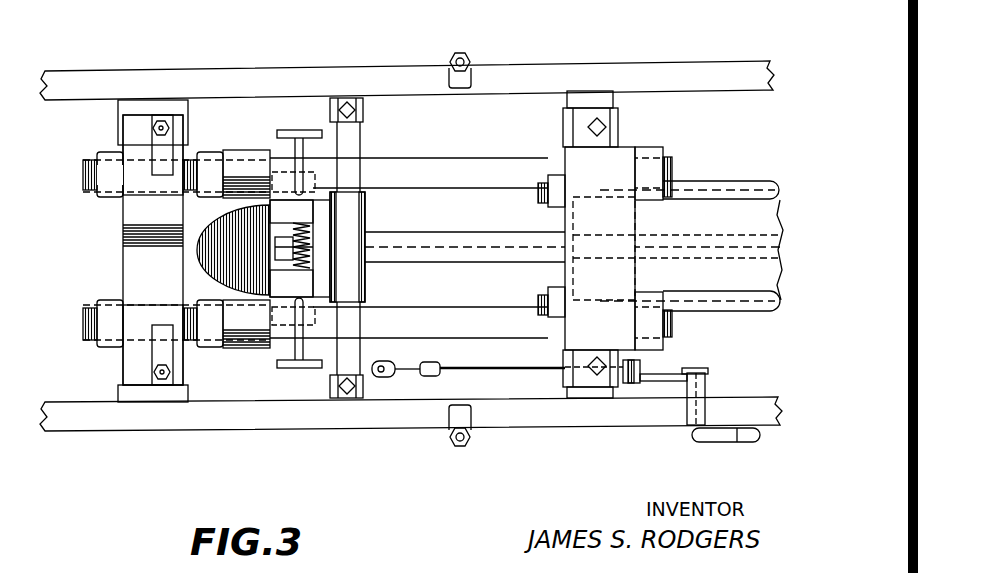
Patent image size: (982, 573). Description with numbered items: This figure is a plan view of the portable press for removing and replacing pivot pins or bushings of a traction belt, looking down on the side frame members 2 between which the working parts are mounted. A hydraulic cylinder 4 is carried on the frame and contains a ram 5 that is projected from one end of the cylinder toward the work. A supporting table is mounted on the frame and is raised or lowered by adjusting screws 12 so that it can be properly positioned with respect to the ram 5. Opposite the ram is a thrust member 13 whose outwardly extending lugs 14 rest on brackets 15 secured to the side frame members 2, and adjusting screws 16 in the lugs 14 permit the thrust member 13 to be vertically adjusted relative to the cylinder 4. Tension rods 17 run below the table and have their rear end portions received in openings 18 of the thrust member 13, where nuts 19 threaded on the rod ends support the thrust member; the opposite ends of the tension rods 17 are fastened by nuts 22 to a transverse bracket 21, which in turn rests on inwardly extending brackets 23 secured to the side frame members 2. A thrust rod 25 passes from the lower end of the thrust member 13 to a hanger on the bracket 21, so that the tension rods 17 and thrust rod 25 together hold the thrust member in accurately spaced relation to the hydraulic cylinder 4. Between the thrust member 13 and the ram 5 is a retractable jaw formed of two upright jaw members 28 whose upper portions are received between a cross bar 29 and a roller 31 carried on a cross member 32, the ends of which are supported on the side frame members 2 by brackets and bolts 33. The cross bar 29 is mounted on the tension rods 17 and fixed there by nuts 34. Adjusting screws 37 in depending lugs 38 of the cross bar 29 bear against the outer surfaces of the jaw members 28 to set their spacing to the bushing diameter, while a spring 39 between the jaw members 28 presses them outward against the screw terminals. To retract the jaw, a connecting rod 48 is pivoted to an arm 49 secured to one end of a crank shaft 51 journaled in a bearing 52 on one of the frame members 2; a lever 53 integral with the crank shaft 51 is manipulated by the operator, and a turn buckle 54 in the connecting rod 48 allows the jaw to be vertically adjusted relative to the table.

The side frame members 2 is at (510, 78).
The hydraulic cylinder 4 is at (777, 190).
The ram 5 is at (718, 230).
The adjusting screws 12 is at (460, 53).
The thrust member 13 is at (113, 226).
The lugs 14 is at (142, 115).
The brackets 15 is at (194, 100).
The adjusting screws 16 is at (163, 122).
The tension rods 17 is at (450, 166).
The openings 18 is at (130, 150).
The nuts 19 is at (98, 153).
The transverse bracket 21 is at (623, 217).
The nuts 22 is at (655, 150).
The inwardly extending brackets 23 is at (620, 98).
The thrust rod 25 is at (466, 238).
The jaw members 28 is at (320, 205).
The cross bar 29 is at (203, 260).
The roller 31 is at (367, 292).
The cross member 32 is at (355, 132).
The brackets and bolts 33 is at (352, 91).
The nuts 34 is at (212, 152).
The adjusting screws 37 is at (299, 130).
The depending lugs 38 is at (285, 172).
The spring 39 is at (296, 246).
The connecting rod 48 is at (522, 368).
The arm 49 is at (657, 382).
The crank shaft 51 is at (697, 373).
The bearing 52 is at (707, 410).
The lever 53 is at (725, 442).
The turn buckle 54 is at (402, 374).